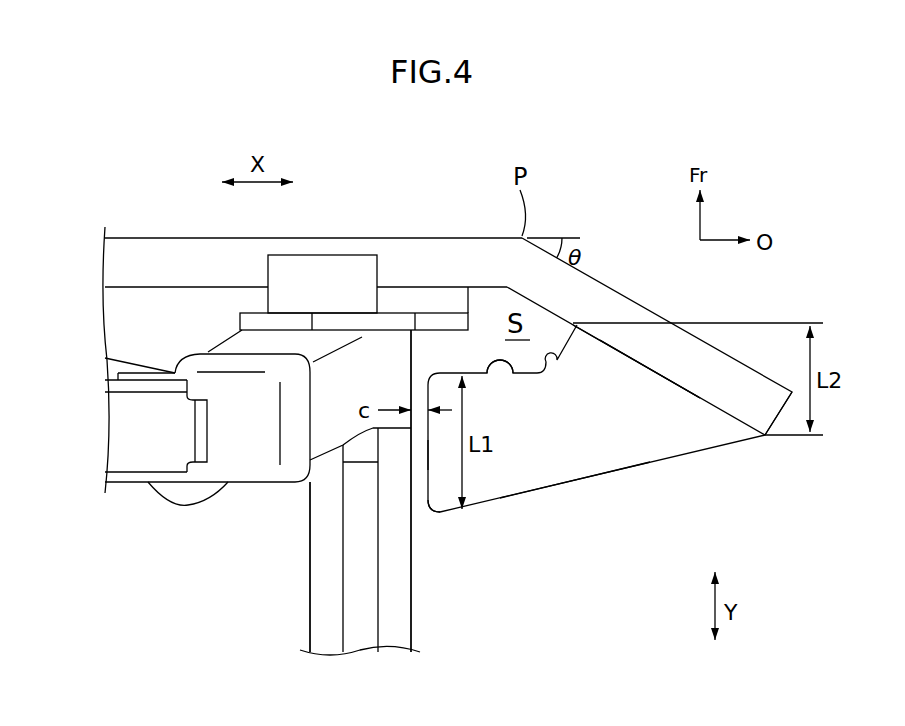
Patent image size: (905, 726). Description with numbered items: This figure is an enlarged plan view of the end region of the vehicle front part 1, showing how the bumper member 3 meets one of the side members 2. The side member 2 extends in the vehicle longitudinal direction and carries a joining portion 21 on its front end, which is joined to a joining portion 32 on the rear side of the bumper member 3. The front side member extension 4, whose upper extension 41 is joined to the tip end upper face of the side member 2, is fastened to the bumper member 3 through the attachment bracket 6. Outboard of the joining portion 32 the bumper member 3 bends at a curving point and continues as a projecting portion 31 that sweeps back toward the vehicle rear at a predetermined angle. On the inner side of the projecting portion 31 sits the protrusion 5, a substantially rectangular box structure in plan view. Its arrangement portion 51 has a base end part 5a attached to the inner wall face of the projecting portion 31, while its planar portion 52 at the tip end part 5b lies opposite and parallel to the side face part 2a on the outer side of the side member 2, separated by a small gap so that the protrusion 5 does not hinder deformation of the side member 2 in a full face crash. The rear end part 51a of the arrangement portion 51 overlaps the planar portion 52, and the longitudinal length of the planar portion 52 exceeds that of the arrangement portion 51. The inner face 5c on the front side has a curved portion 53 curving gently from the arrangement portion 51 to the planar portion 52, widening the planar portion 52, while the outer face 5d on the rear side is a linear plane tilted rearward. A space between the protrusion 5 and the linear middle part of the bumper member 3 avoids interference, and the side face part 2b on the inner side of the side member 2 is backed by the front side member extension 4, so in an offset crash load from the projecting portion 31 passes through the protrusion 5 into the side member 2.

The vehicle front part 1 is at (160, 545).
The side member 2 is at (310, 605).
The side face part on the vehicle outer side of the side member 2a is at (413, 595).
The side face part on the vehicle inner side of the side member 2b is at (310, 575).
The bumper member 3 is at (151, 260).
The front side member extension 4 is at (252, 484).
The protrusion 5 is at (628, 468).
The base end part 5a is at (660, 385).
The tip end part 5b is at (430, 455).
The inner face on the vehicle front side of the protrusion 5c is at (513, 375).
The outer face on the vehicle rear side of the protrusion 5d is at (560, 487).
The attachment bracket 6 is at (325, 268).
The joining portion 21 is at (450, 320).
The projecting portion 31 is at (593, 297).
The joining portion 32 is at (418, 297).
The upper extension 41 is at (358, 360).
The arrangement portion 51 is at (655, 368).
The rear end part 51a is at (766, 440).
The planar portion 52 is at (420, 478).
The curved portion 53 is at (563, 358).